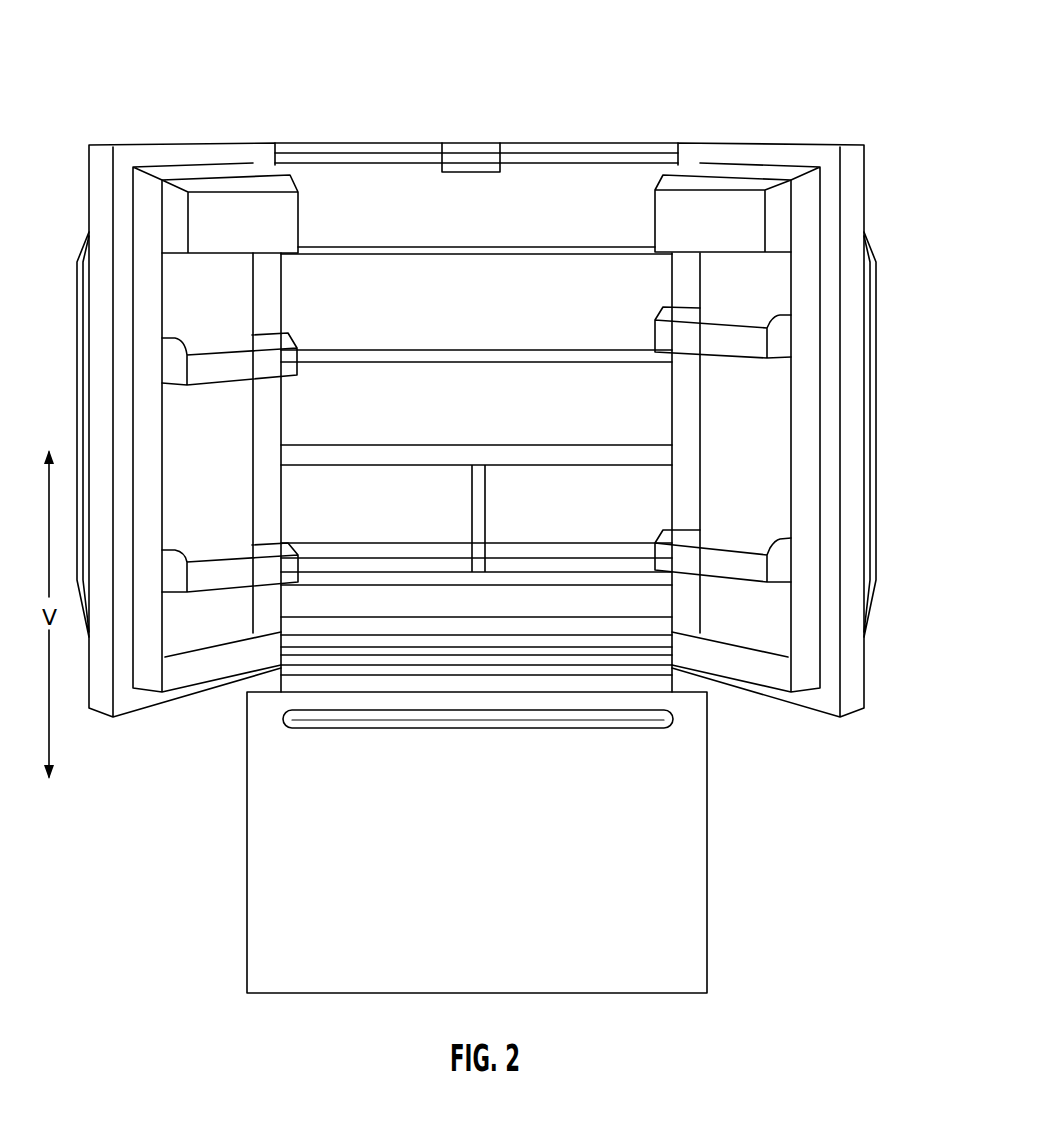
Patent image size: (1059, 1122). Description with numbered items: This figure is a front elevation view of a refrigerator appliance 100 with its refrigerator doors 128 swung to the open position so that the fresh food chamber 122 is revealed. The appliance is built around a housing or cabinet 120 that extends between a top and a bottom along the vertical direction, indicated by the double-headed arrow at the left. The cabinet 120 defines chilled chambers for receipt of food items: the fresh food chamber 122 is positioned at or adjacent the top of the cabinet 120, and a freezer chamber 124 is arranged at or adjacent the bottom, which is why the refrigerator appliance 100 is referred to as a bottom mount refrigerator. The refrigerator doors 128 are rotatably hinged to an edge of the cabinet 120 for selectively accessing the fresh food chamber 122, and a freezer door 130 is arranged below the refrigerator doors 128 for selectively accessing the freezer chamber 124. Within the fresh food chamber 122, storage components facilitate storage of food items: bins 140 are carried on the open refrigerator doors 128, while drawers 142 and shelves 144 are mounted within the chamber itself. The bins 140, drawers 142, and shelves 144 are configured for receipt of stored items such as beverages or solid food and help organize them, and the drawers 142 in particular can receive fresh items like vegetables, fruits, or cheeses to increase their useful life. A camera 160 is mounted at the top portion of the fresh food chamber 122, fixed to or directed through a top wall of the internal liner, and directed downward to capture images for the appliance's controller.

The refrigerator appliance 100 is at (682, 72).
The cabinet 120 is at (706, 690).
The fresh food chamber 122 is at (590, 178).
The freezer chamber 124 is at (676, 897).
The refrigerator doors 128 is at (188, 157).
The freezer door 130 is at (278, 904).
The bins 140 is at (248, 573).
The drawers 142 is at (408, 560).
The shelves 144 is at (473, 252).
The camera 160 is at (473, 172).